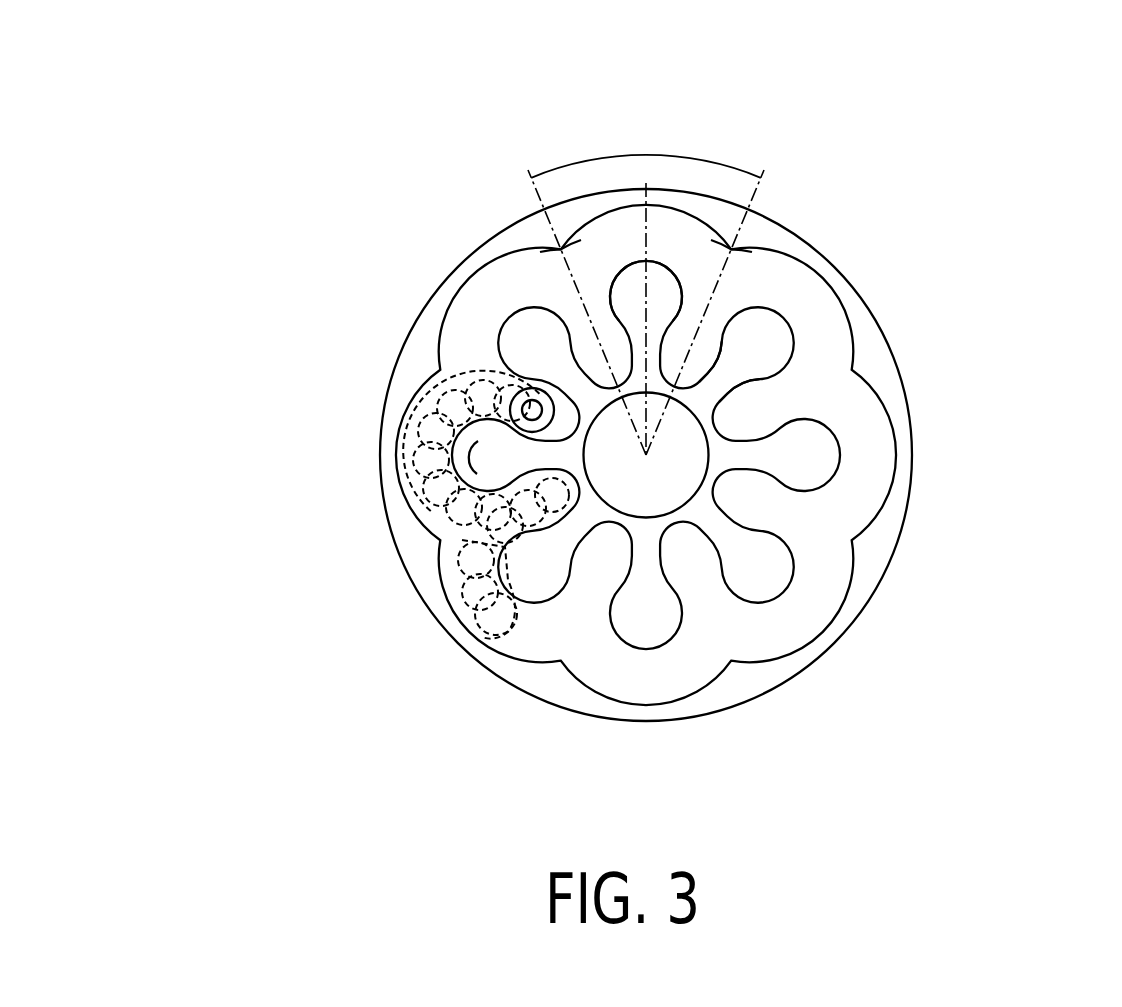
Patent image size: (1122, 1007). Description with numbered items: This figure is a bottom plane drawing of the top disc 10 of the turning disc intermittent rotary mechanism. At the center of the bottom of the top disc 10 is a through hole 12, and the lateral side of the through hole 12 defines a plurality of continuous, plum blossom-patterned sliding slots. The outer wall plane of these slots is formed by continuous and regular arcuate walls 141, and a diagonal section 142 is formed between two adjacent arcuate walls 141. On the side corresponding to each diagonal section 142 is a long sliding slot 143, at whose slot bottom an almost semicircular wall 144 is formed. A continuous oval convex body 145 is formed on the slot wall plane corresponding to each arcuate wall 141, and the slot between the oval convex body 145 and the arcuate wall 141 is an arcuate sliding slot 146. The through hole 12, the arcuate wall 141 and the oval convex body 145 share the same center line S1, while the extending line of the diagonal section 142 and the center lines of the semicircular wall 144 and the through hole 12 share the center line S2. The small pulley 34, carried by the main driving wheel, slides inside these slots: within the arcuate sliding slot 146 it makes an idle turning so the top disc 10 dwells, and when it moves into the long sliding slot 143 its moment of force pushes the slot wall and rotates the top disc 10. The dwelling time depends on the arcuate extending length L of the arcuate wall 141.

The top disc 10 is at (387, 520).
The through hole 12 is at (668, 452).
The small pulley 34 is at (528, 410).
The arcuate wall 141 is at (743, 432).
The diagonal section 142 is at (563, 263).
The long sliding slot 143 is at (702, 343).
The semicircular wall 144 is at (702, 380).
The oval convex body 145 is at (655, 296).
The arcuate sliding slot 146 is at (810, 608).
The center line S1 is at (646, 220).
The center line S2 is at (589, 317).
The arcuate extending length L is at (646, 134).